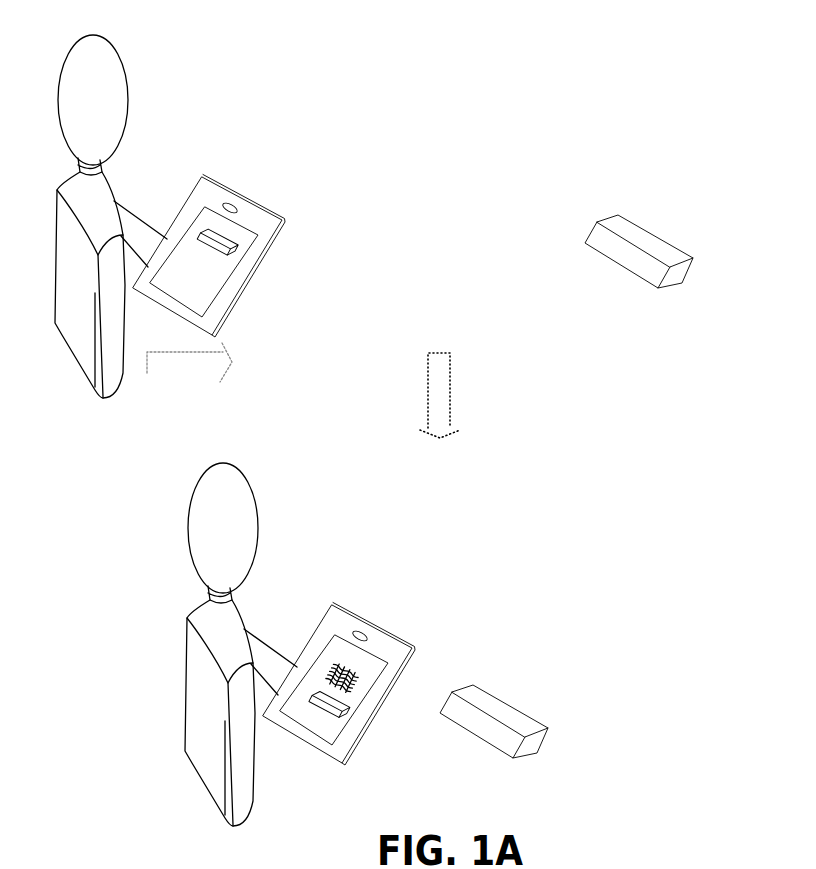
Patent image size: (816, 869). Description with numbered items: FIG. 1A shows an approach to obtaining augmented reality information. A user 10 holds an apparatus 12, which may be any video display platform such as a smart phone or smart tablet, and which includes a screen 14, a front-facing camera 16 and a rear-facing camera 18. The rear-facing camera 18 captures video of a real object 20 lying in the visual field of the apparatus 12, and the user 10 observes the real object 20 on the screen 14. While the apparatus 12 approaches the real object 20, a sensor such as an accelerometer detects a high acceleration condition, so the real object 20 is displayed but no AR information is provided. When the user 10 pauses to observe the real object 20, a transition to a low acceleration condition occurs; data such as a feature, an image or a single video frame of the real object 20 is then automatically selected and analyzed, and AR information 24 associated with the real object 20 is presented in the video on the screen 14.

The user 10 is at (117, 55).
The apparatus 12 is at (286, 427).
The screen 14 is at (196, 215).
The front-facing camera 16 is at (222, 203).
The rear-facing camera 18 is at (253, 200).
The real object 20 is at (230, 253).
The AR information 24 is at (345, 672).